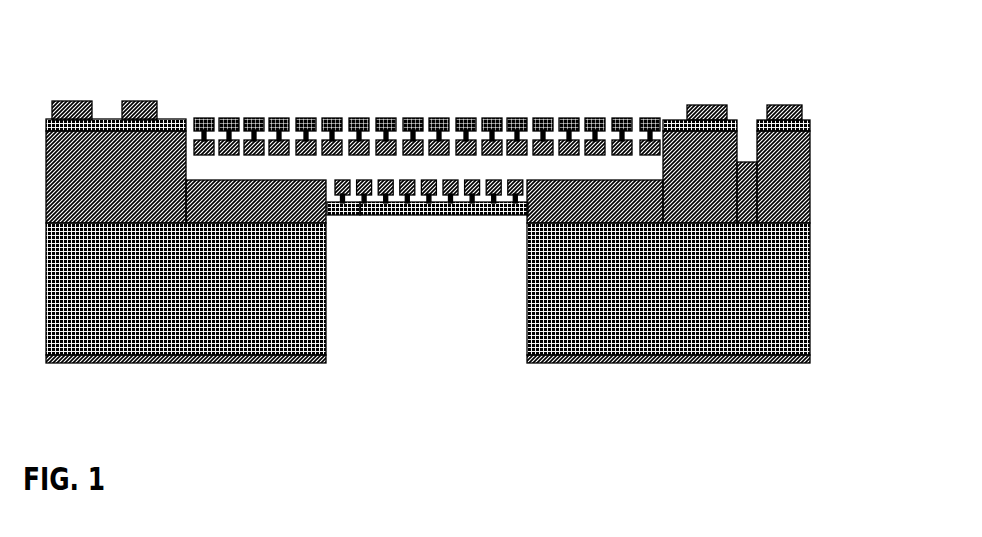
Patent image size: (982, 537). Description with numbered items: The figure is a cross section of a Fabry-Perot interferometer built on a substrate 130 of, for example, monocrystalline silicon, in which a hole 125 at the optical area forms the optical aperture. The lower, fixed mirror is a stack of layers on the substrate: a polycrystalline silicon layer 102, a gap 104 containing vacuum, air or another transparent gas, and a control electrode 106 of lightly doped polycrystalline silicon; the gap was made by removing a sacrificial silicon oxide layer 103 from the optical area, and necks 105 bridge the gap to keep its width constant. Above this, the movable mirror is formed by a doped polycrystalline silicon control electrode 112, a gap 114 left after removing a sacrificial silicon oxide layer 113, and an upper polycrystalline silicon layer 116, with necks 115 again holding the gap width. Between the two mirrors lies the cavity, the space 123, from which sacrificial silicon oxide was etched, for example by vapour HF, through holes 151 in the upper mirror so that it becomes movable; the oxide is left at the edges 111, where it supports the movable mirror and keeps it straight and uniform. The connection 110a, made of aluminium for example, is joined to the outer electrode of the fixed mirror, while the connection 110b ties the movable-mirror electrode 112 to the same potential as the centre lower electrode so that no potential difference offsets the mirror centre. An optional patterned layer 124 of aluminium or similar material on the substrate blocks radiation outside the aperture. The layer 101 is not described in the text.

The substrate 101 is at (280, 222).
The polycrystalline silicon layer 102 is at (360, 210).
The sacrificial layer of silicon oxide 103 is at (618, 202).
The gap 104 is at (438, 215).
The necks 105 is at (495, 195).
The control electrode of the fixed mirror 106 is at (543, 185).
The connection 110a is at (722, 102).
The connection 110b is at (142, 102).
The edges of the silicon oxide layer 111 is at (173, 165).
The control electrode of the movable mirror 112 is at (365, 150).
The sacrificial layer of silicon oxide 113 is at (155, 138).
The gap 114 is at (423, 137).
The necks 115 is at (518, 135).
The polycrystalline silicon layer 116 is at (568, 125).
The space 123 is at (260, 168).
The patterned layer 124 is at (303, 362).
The hole 125 is at (438, 332).
The substrate 130 is at (778, 328).
The holes 151 is at (478, 118).